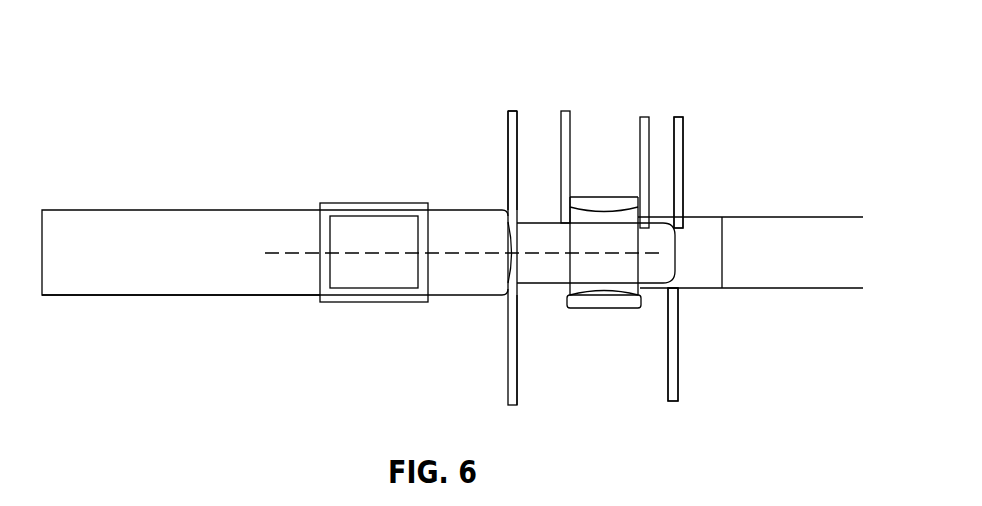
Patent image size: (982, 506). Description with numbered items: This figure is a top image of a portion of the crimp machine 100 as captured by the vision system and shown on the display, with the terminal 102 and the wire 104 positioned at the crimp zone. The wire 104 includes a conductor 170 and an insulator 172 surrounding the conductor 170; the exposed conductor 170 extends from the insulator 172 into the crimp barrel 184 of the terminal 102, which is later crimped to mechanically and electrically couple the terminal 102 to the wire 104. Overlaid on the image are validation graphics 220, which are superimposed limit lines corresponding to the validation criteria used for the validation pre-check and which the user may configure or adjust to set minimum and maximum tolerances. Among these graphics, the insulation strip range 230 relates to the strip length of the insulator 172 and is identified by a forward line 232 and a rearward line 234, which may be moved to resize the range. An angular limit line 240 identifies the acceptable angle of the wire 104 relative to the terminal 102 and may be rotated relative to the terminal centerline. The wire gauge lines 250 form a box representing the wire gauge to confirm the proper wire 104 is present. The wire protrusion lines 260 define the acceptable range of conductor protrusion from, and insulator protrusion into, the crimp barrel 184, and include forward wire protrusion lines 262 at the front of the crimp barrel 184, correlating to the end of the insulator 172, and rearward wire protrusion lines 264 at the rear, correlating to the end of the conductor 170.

The crimp machine 100 is at (338, 62).
The terminal 102 is at (768, 270).
The wire 104 is at (187, 228).
The conductor 170 is at (662, 262).
The insulator 172 is at (225, 272).
The crimp barrel 184 is at (597, 203).
The validation graphics 220 is at (368, 212).
The insulation strip range 230 is at (508, 363).
The forward line 232 is at (513, 323).
The rearward line 234 is at (673, 332).
The angular limit line 240 is at (473, 252).
The wire gauge lines 250 is at (373, 292).
The wire protrusion lines 260 is at (508, 132).
The forward wire protrusion lines 262 is at (561, 138).
The rearward wire protrusion lines 264 is at (683, 172).